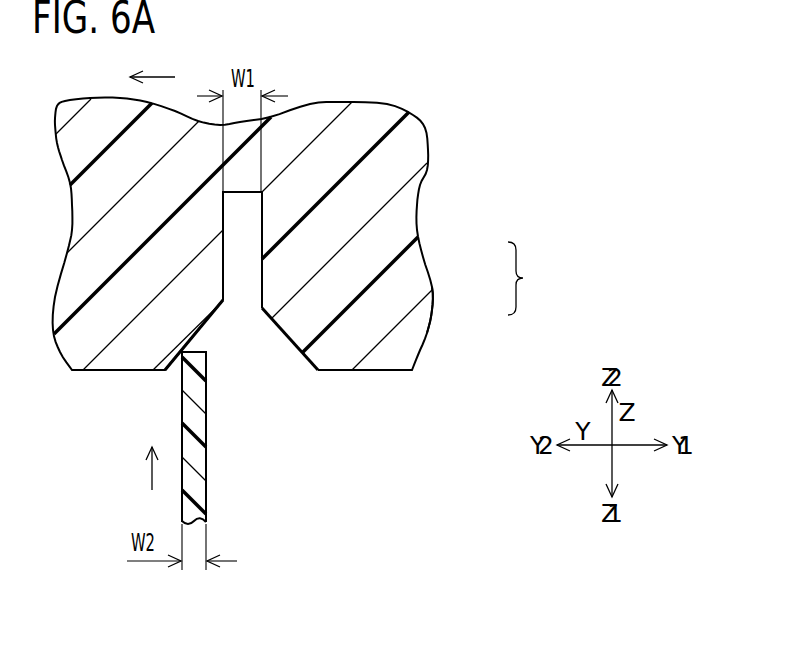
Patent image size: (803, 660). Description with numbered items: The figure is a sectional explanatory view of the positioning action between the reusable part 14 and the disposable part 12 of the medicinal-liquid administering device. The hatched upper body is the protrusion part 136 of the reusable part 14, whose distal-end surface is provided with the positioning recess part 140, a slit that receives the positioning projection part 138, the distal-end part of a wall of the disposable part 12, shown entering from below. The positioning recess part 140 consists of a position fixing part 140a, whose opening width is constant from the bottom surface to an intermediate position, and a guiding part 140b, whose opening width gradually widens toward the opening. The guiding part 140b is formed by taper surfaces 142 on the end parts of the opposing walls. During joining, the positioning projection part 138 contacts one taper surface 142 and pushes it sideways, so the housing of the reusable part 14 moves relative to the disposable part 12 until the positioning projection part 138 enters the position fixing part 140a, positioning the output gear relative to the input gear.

The disposable part 12 is at (222, 513).
The reusable part 14 is at (437, 119).
The protrusion part 136 is at (403, 218).
The positioning projection part 138 is at (192, 483).
The positioning recess part 140 is at (537, 278).
The position fixing part 140a is at (240, 243).
The guiding part 140b is at (275, 342).
The taper surfaces 142 is at (176, 367).